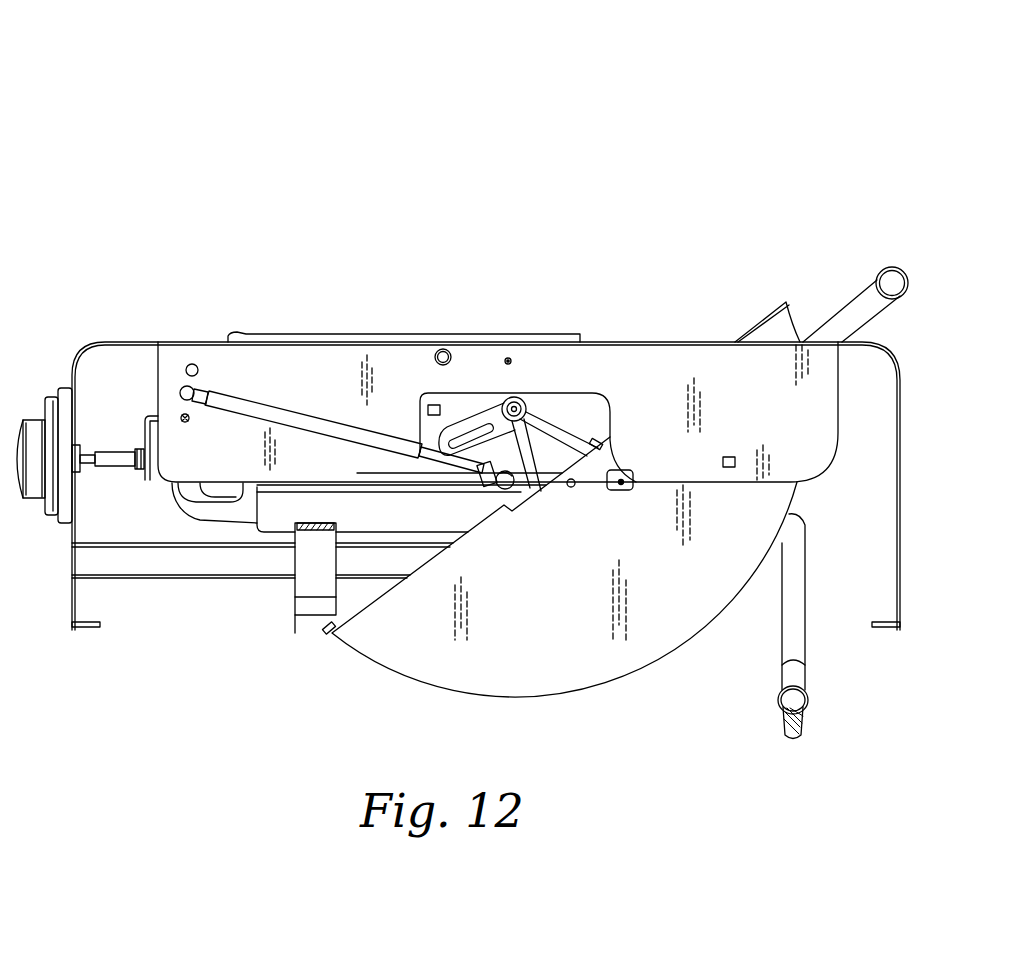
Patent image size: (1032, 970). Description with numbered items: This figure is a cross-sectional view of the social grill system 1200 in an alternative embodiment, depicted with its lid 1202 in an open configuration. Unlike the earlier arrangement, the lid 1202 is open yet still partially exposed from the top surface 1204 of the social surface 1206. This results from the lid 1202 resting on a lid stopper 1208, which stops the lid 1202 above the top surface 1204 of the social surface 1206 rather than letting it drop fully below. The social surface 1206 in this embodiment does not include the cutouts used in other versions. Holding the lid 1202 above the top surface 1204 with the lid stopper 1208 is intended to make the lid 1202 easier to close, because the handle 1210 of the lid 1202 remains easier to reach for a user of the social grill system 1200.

The social grill system 1200 is at (142, 106).
The lid 1202 is at (752, 513).
The top surface 1204 is at (157, 348).
The social surface 1206 is at (903, 338).
The lid stopper 1208 is at (327, 633).
The handle 1210 is at (878, 276).